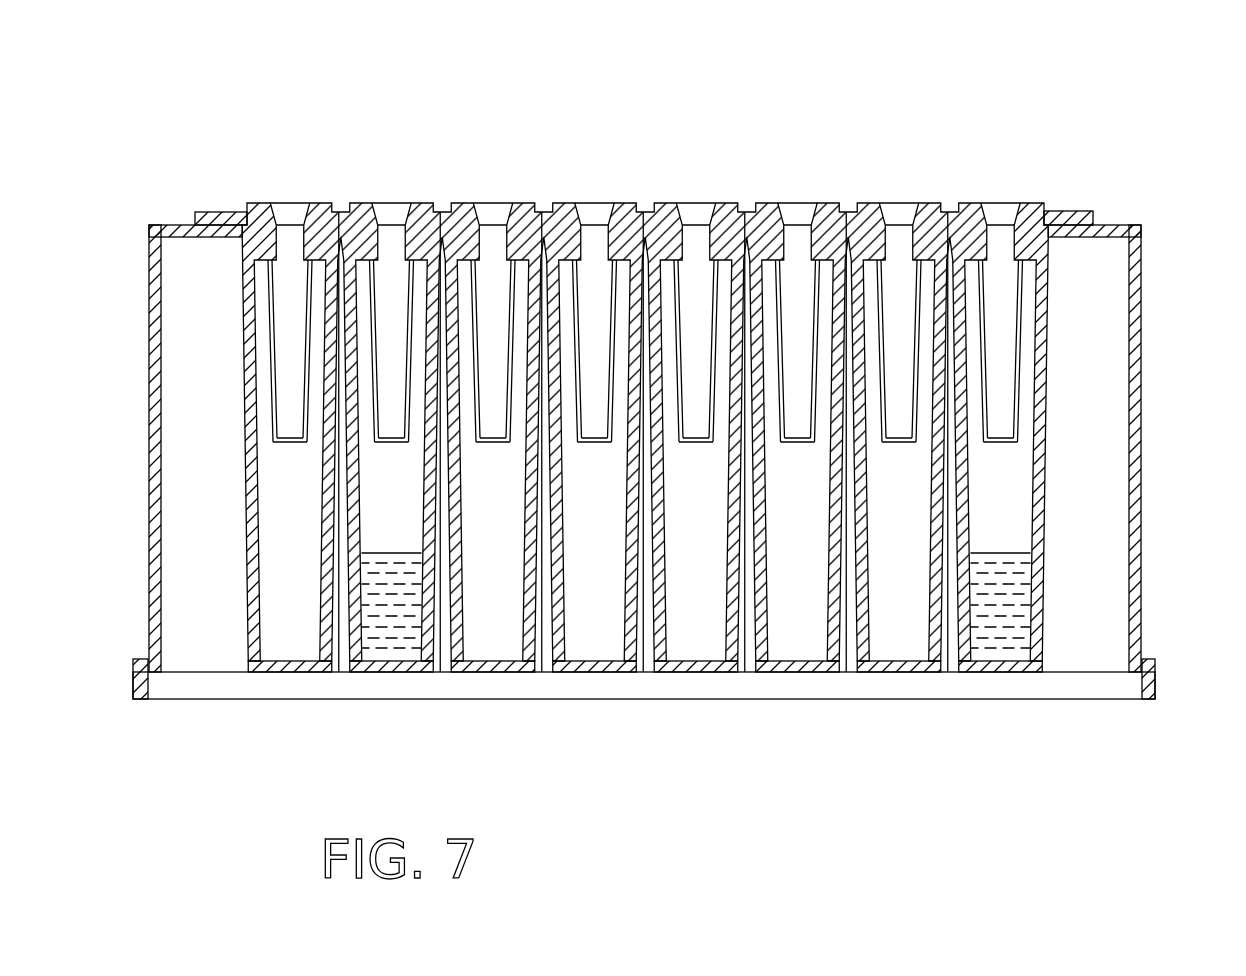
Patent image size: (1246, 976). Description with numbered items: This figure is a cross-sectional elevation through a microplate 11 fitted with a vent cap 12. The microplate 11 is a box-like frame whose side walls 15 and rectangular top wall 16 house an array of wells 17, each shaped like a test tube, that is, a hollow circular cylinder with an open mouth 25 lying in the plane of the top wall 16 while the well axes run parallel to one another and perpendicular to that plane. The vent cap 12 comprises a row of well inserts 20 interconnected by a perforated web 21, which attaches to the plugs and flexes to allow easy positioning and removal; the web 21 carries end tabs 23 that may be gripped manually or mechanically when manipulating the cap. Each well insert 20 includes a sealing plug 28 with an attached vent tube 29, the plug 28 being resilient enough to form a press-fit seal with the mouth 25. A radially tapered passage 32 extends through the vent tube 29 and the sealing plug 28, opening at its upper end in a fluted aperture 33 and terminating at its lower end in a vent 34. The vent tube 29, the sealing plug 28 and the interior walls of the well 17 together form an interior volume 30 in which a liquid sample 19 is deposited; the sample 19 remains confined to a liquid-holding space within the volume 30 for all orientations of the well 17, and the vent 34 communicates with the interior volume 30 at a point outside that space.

The microplate 11 is at (635, 393).
The vent cap 12 is at (536, 210).
The side wall 15 is at (152, 268).
The top wall 16 is at (170, 225).
The well 17 is at (713, 672).
The liquid sample 19 is at (400, 647).
The well insert 20 is at (1047, 205).
The perforated web 21 is at (343, 216).
The end tab 23 is at (197, 212).
The mouth 25 is at (613, 240).
The sealing plug 28 is at (733, 203).
The vent tube 29 is at (666, 339).
The interior volume 30 is at (585, 618).
The passage 32 is at (487, 255).
The fluted aperture 33 is at (902, 212).
The vent 34 is at (288, 445).